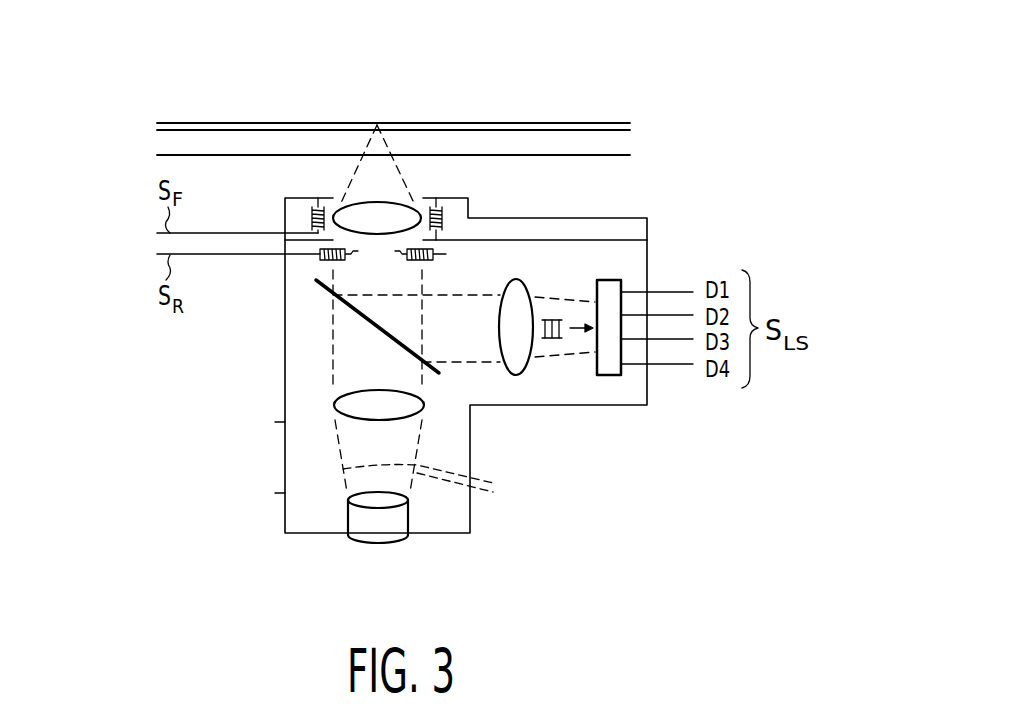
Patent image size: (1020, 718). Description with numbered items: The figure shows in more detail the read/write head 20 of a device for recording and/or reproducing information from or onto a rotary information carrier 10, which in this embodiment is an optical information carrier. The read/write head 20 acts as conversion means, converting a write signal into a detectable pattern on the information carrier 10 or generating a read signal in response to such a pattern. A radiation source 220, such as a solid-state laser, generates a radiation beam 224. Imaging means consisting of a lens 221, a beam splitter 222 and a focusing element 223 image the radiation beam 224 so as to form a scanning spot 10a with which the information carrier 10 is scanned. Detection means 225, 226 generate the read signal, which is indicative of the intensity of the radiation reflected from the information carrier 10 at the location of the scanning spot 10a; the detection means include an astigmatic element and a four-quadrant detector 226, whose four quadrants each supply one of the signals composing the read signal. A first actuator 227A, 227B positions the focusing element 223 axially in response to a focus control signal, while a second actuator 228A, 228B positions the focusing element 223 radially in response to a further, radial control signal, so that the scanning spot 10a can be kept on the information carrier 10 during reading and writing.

The information carrier 10 is at (287, 109).
The scanning spot 10a is at (377, 125).
The read/write head 20 is at (258, 451).
The radiation source 220 is at (393, 537).
The lens 221 is at (347, 393).
The beam splitter 222 is at (320, 287).
The focusing element 223 is at (362, 208).
The radiation beam 224 is at (437, 484).
The detection means 225 is at (517, 376).
The four-quadrant detector 226 is at (610, 376).
The first actuator 227A is at (310, 220).
The first actuator 227B is at (442, 217).
The second actuator 228A is at (322, 260).
The second actuator 228B is at (436, 260).